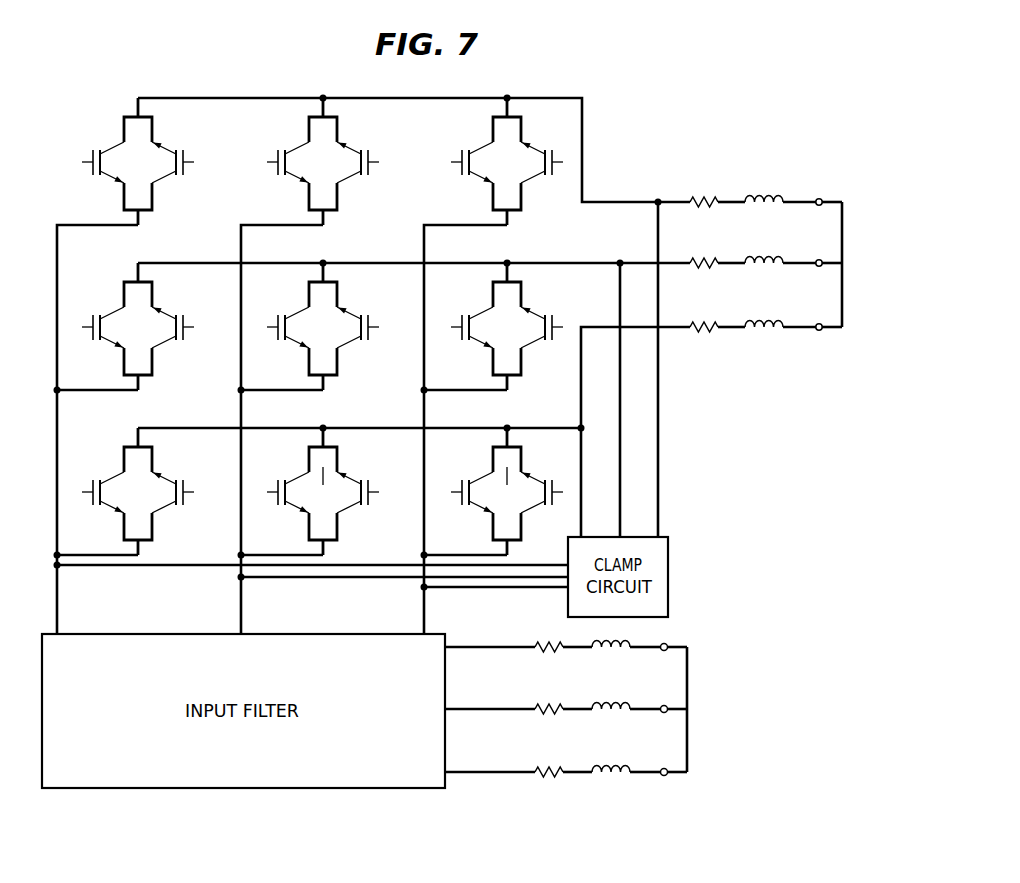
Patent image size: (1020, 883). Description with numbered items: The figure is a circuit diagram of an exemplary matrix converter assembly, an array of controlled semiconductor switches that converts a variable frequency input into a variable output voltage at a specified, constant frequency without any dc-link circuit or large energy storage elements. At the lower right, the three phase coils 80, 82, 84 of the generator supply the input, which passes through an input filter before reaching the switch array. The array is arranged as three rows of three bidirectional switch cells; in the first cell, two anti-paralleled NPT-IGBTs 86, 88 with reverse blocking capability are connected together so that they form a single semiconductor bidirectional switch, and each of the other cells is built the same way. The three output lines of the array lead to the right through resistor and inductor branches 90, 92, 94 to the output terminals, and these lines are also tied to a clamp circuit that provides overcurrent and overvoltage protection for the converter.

The generator phase coil 80 is at (622, 651).
The generator phase coil 82 is at (622, 713).
The generator phase coil 84 is at (622, 776).
The NPT-IGBT 86 is at (88, 151).
The NPT-IGBT 88 is at (190, 176).
The output inductor (first phase) 90 is at (779, 206).
The output inductor (second phase) 92 is at (779, 267).
The output inductor (third phase) 94 is at (779, 331).